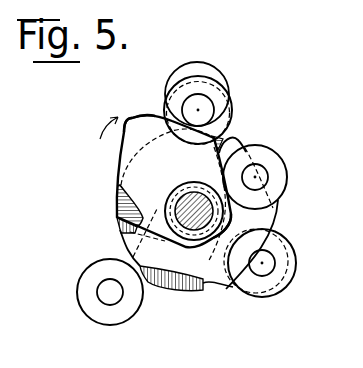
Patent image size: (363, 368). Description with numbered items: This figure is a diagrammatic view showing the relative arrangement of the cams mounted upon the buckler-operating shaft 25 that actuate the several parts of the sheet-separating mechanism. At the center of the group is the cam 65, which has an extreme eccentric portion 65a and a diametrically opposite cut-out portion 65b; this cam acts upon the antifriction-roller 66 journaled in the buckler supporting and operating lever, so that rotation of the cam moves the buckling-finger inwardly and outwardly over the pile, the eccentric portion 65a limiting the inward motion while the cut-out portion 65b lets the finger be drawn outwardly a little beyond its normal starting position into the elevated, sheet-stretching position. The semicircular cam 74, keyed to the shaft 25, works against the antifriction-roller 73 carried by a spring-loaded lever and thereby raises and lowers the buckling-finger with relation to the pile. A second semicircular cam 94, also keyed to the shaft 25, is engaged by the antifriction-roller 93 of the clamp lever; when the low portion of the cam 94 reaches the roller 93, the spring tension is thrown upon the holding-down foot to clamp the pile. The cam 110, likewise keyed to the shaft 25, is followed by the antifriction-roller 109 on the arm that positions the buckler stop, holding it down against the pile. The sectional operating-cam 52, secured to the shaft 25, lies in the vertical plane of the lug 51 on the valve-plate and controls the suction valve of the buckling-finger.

The buckler-operating shaft 25 is at (183, 196).
The lug or projection 51 is at (213, 70).
The sectional operating-cam 52 is at (120, 230).
The cam 65 is at (123, 148).
The extreme eccentric portion 65a is at (151, 88).
The cut-out portion 65b is at (212, 238).
The antifriction-roller 66 is at (281, 165).
The antifriction-roller 73 is at (226, 117).
The semicircular cam 74 is at (267, 218).
The antifriction-roller 93 is at (135, 305).
The semicircular cam 94 is at (170, 288).
The antifriction-roller 109 is at (284, 276).
The cam 110 is at (119, 194).